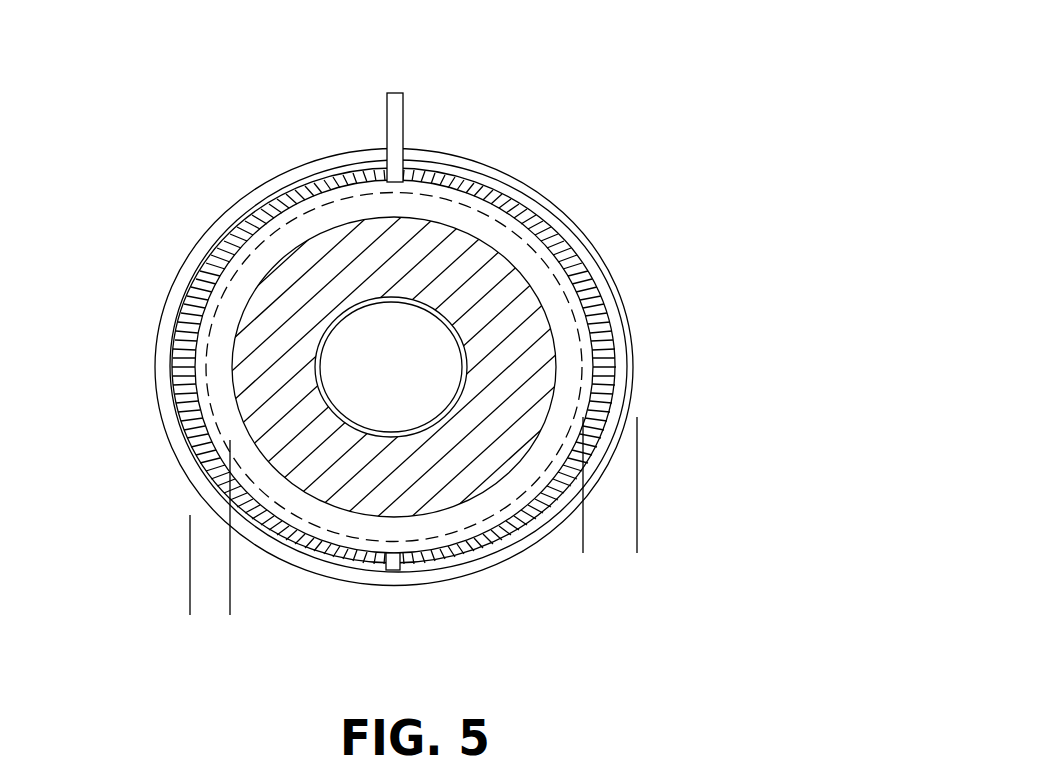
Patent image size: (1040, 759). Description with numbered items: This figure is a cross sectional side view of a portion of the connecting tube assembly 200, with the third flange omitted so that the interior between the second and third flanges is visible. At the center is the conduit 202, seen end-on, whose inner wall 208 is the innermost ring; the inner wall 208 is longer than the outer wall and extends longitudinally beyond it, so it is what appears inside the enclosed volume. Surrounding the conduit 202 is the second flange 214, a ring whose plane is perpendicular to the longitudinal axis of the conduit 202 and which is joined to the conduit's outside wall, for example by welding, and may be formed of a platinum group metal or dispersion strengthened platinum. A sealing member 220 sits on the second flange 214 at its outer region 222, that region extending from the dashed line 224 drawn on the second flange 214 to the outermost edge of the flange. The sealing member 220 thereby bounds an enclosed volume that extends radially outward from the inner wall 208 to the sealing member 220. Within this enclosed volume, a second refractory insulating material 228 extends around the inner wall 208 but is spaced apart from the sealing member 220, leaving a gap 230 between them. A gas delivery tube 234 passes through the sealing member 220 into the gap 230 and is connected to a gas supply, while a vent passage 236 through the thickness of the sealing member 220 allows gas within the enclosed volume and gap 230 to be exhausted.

The connecting tube assembly 200 is at (487, 358).
The conduit 202 is at (255, 255).
The inner wall 208 is at (334, 408).
The second flange 214 is at (287, 170).
The sealing member 220 is at (560, 230).
The outer region 222 is at (647, 569).
The dashed line 224 is at (475, 212).
The second refractory insulating material 228 is at (557, 377).
The gap 230 is at (240, 631).
The gas delivery tube 234 is at (403, 115).
The vent passage 236 is at (403, 562).